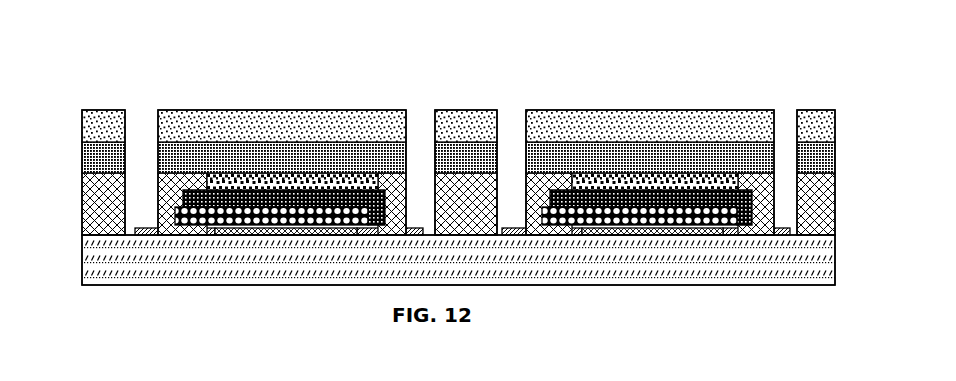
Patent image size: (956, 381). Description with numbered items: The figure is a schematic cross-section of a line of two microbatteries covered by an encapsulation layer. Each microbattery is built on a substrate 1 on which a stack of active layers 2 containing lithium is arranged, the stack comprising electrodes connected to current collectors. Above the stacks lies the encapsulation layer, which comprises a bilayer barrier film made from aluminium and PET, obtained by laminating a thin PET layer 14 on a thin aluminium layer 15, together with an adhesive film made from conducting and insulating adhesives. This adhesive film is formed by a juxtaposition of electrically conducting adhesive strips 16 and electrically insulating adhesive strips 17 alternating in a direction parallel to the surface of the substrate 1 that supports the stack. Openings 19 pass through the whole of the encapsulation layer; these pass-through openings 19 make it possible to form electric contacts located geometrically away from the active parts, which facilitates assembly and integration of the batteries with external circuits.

The substrate 1 is at (641, 257).
The stack of active layers 2 is at (241, 242).
The PET layer of the barrier film 14 is at (552, 130).
The aluminium layer of the barrier film 15 is at (312, 162).
The electrically conducting adhesive strips 16 is at (112, 212).
The electrically insulating adhesive strips 17 is at (281, 169).
The openings 19 is at (507, 173).